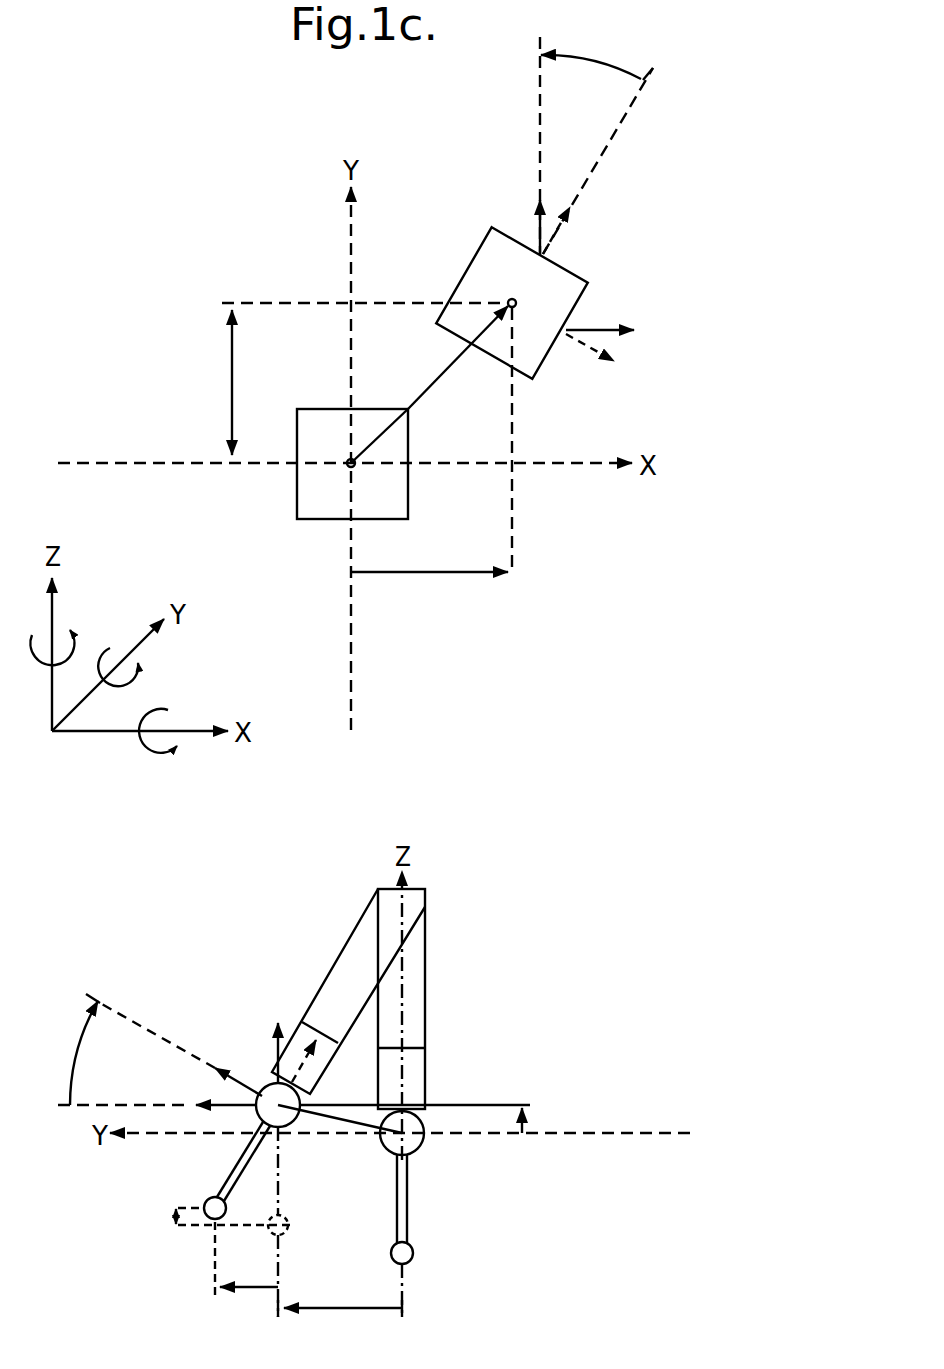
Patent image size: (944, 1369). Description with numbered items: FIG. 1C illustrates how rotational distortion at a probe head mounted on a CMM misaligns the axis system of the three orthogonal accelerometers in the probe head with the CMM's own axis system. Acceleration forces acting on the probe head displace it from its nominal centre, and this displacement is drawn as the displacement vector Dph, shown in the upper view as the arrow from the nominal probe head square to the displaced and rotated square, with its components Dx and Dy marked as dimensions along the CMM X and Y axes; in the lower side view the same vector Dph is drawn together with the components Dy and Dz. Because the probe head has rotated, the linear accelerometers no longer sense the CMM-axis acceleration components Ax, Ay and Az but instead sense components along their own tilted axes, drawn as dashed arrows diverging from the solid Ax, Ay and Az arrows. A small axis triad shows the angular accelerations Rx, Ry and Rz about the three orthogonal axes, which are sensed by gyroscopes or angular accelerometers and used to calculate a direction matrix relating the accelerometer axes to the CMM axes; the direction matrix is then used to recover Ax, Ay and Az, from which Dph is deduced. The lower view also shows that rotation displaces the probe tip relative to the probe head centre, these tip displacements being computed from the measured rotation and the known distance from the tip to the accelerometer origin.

The displacement vector Dph is at (393, 736).
The displacement in the y axis Dy is at (299, 813).
The displacement in the x axis Dx is at (429, 589).
The displacement in the z axis Dz is at (543, 1120).
The acceleration component in the CMM x axis Ax is at (620, 332).
The acceleration component in the CMM y axis Ay is at (354, 646).
The acceleration component in the CMM z axis Az is at (278, 1039).
The angular acceleration about the x axis Rx is at (126, 907).
The angular acceleration about the y axis Ry is at (135, 667).
The angular acceleration about the z axis Rz is at (341, 348).